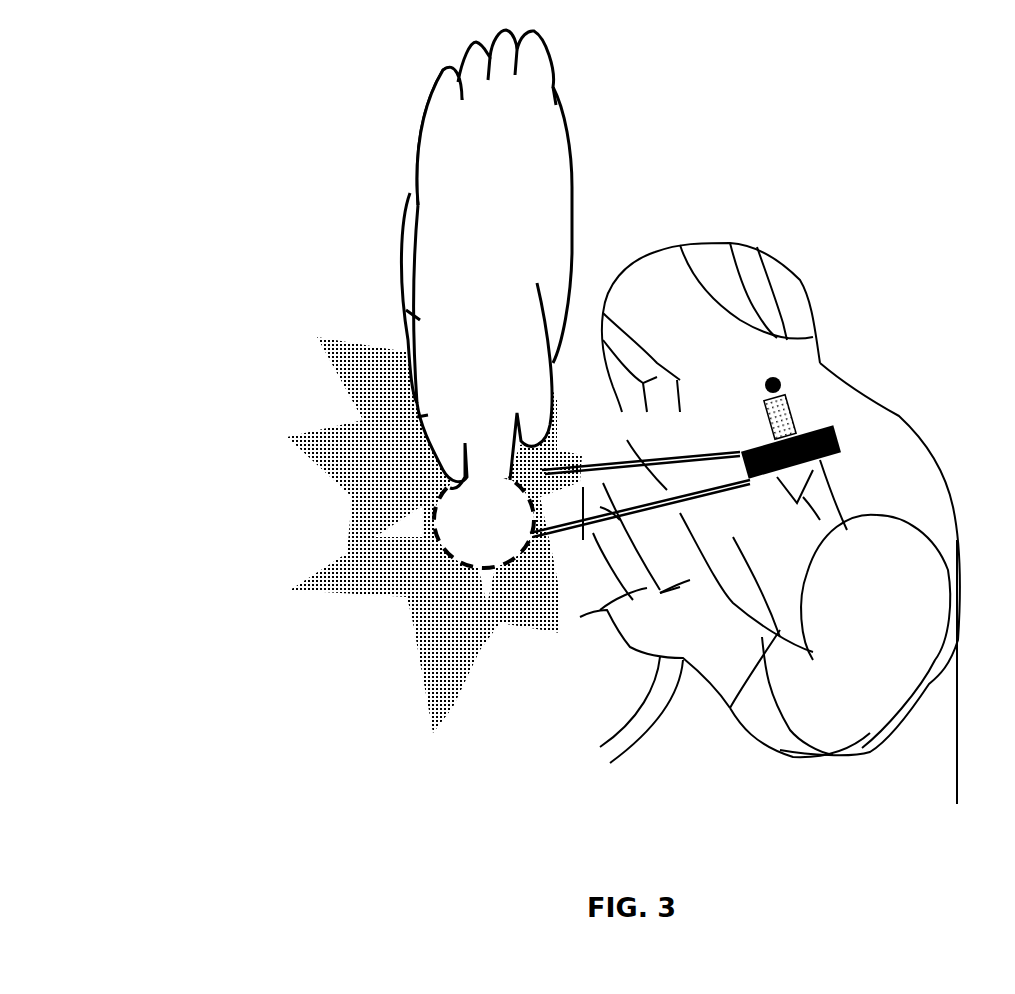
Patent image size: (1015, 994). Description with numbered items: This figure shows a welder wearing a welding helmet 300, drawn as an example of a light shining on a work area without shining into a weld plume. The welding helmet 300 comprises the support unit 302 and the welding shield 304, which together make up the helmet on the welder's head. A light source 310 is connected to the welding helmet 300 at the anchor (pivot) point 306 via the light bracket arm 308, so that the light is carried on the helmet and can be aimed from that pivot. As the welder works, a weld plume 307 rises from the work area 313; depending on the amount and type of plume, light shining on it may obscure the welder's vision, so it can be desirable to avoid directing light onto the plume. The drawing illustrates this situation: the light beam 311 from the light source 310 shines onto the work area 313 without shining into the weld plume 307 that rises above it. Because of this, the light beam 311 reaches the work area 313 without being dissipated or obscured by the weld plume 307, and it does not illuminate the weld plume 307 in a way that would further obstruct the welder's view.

The welding helmet 300 is at (80, 72).
The support unit 302 is at (770, 463).
The welding shield 304 is at (653, 238).
The anchor (pivot) point 306 is at (783, 373).
The weld plume 307 is at (388, 258).
The light bracket arm 308 is at (780, 415).
The light source 310 is at (832, 433).
The light beam 311 is at (567, 547).
The work area 313 is at (423, 522).